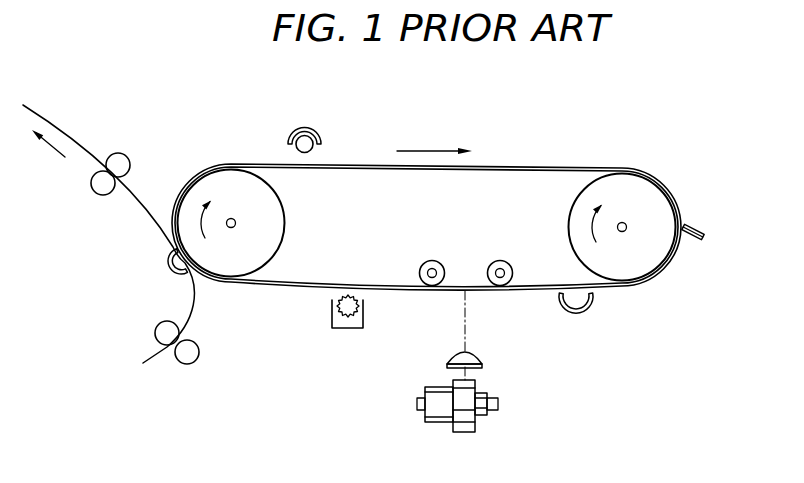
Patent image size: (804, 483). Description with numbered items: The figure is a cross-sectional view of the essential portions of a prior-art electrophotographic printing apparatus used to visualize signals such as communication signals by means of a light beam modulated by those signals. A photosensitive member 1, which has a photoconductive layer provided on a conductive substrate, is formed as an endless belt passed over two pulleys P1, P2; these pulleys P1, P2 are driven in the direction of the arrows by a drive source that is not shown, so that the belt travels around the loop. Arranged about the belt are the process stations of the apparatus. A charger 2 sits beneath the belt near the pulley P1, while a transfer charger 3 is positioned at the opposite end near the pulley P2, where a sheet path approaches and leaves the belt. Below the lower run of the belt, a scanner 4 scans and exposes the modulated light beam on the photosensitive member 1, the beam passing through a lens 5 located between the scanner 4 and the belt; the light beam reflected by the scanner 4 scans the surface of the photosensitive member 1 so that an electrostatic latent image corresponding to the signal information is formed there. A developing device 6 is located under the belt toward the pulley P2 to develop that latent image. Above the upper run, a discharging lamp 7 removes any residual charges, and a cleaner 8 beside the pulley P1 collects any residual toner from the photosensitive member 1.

The photosensitive member 1 is at (528, 297).
The charger 2 is at (582, 313).
The transfer charger 3 is at (167, 271).
The scanner 4 is at (440, 387).
The lens 5 is at (481, 359).
The developing device 6 is at (340, 330).
The discharging lamp 7 is at (300, 127).
The cleaner 8 is at (694, 224).
The pulley P1 is at (632, 184).
The pulley P2 is at (221, 185).